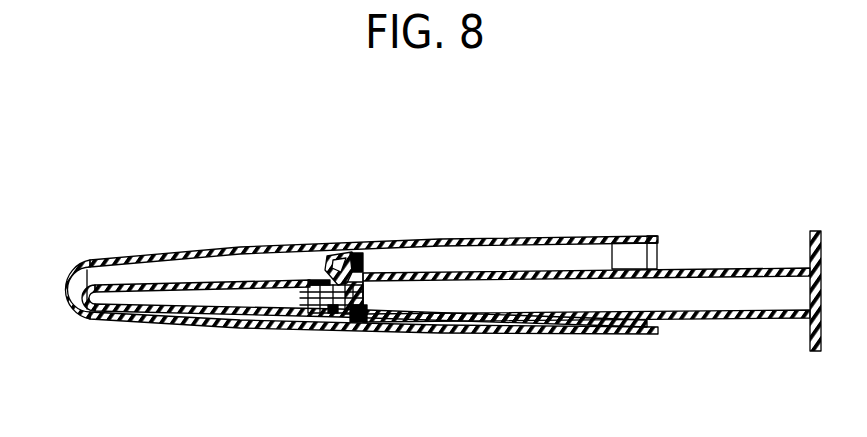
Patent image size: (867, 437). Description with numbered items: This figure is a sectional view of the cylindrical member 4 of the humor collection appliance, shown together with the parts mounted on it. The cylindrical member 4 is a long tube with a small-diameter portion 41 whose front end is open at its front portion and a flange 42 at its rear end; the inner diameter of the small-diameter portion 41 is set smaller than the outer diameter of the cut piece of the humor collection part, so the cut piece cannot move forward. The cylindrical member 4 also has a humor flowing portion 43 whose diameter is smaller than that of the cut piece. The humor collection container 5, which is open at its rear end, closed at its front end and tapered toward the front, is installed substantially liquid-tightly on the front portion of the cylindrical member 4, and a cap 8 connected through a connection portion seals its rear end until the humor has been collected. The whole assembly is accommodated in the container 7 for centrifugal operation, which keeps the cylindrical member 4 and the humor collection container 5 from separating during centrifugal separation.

The cylindrical member 4 is at (732, 313).
The humor collection container 5 is at (222, 318).
The container for centrifugal operation 7 is at (477, 242).
The cap 8 is at (347, 248).
The small-diameter portion 41 is at (328, 300).
The flange 42 is at (812, 250).
The humor flowing portion 43 is at (310, 248).